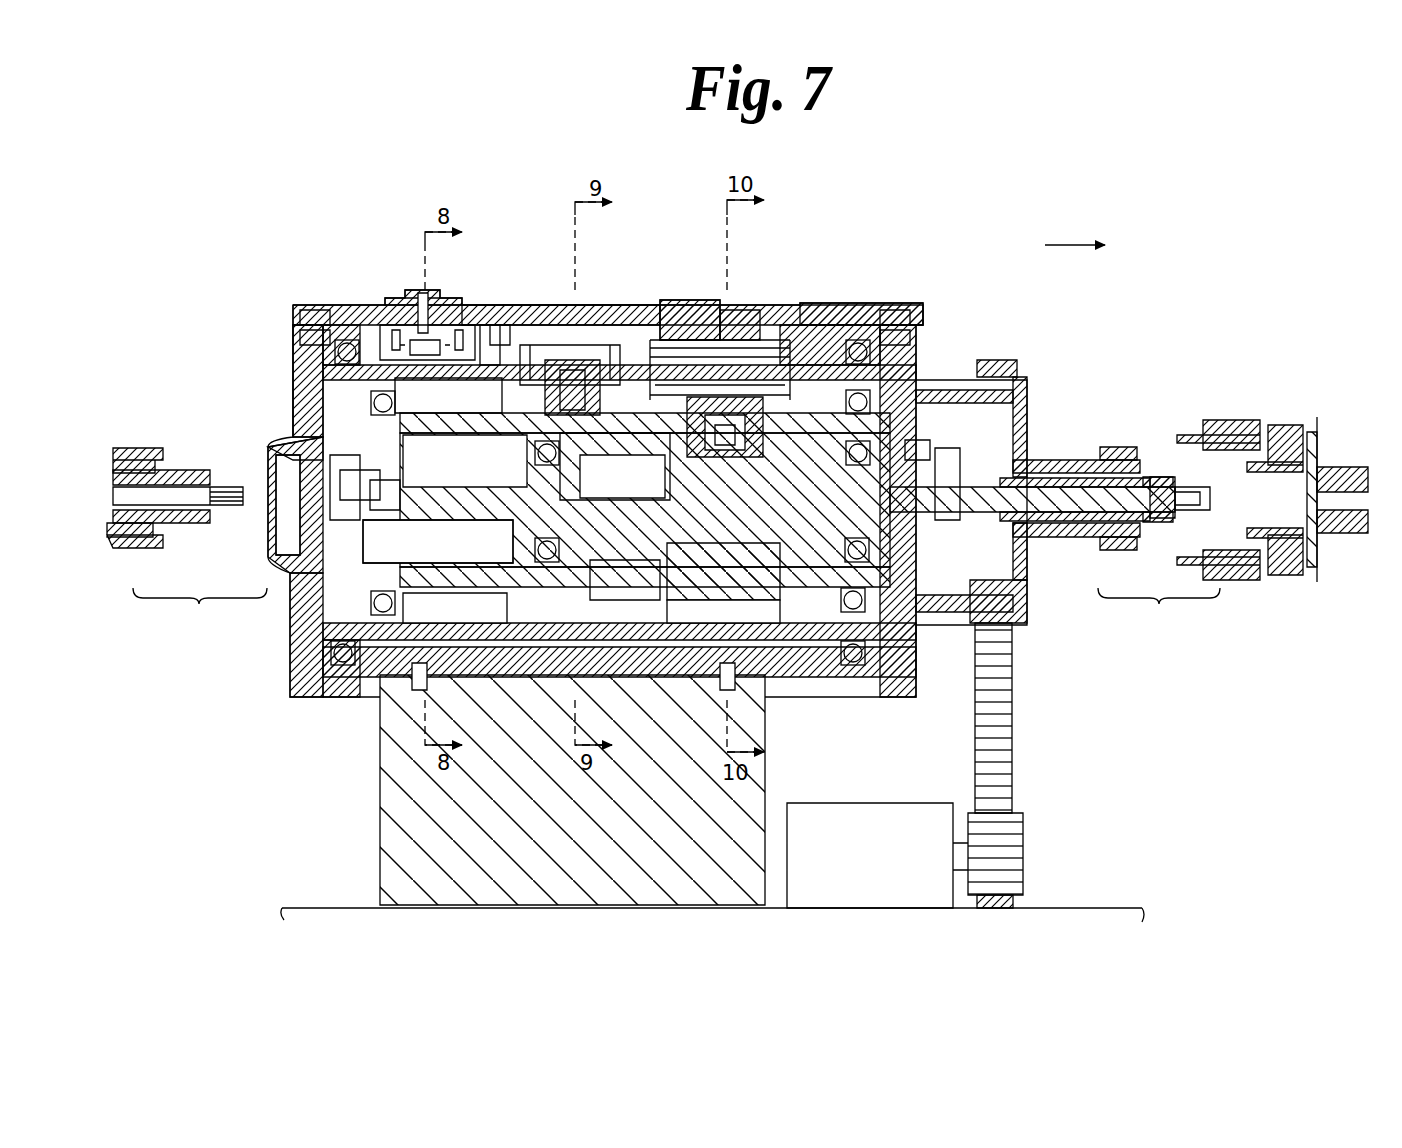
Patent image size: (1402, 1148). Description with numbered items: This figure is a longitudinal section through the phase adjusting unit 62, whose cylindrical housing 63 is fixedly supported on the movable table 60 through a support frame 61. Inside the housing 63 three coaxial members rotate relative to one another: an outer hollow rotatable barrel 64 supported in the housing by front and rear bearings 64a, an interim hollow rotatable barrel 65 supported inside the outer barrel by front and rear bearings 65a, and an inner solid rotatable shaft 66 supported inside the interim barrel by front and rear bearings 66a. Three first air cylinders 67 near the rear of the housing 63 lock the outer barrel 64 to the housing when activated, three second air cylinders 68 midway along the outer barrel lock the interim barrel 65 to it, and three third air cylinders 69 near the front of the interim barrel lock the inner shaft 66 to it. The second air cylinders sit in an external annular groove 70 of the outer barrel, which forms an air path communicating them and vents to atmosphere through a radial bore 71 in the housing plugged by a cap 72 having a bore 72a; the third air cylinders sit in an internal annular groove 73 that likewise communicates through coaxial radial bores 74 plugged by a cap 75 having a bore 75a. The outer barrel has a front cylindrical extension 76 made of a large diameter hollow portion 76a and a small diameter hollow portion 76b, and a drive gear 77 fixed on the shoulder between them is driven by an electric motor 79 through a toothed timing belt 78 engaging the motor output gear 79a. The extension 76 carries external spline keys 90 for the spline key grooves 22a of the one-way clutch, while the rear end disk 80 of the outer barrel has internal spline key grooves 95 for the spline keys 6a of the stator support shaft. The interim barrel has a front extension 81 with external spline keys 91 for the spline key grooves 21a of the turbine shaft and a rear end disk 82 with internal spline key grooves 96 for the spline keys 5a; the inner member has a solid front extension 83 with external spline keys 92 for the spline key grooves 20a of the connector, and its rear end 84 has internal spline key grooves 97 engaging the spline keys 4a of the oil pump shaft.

The spline keys 4a is at (223, 508).
The spline keys 5a is at (183, 470).
The spline keys 6a is at (148, 448).
The spline key grooves 20a is at (1328, 507).
The spline key grooves 21a is at (1279, 472).
The spline key grooves 22a is at (1234, 450).
The movable table 60 is at (1114, 902).
The support frame 61 is at (617, 910).
The phase adjusting unit 62 is at (954, 235).
The cylindrical housing 63 is at (846, 303).
The outer hollow cylindrical rotatable barrel 64 is at (658, 326).
The front and rear bearings 64a is at (342, 317).
The interim hollow cylindrical rotatable barrel 65 is at (612, 445).
The front and rear bearings 65a is at (407, 400).
The inner solid cylindrical rotatable shaft 66 is at (599, 570).
The front and rear bearings 66a is at (537, 553).
The first air cylinders 67 is at (372, 298).
The second air cylinders 68 is at (612, 349).
The third air cylinders 69 is at (743, 391).
The external annular groove 70 is at (538, 325).
The radial bore 71 is at (500, 305).
The cap 72 is at (664, 300).
The bore 72a is at (562, 326).
The internal annular groove 73 is at (674, 446).
The coaxial radial bores 74 is at (798, 325).
The cap 75 is at (710, 320).
The bore 75a is at (742, 310).
The front cylindrical extension 76 is at (1028, 433).
The large diameter hollow cylindrical portion 76a is at (950, 407).
The small diameter hollow cylindrical portion 76b is at (1088, 460).
The drive gear 77 is at (1005, 360).
The toothed timing belt 78 is at (1012, 740).
The electric motor 79 is at (897, 803).
The output gear 79a is at (1025, 850).
The rear end disk 80 is at (290, 400).
The front extension 81 is at (1017, 544).
The rear end disk 82 is at (306, 445).
The solid front extension 83 is at (1150, 510).
The rear end 84 is at (430, 520).
The external spline keys 90 is at (1123, 447).
The external spline keys 91 is at (1153, 477).
The external spline keys 92 is at (1200, 508).
The internal spline key grooves 95 is at (300, 465).
The internal spline key grooves 96 is at (362, 490).
The internal spline key grooves 97 is at (402, 504).